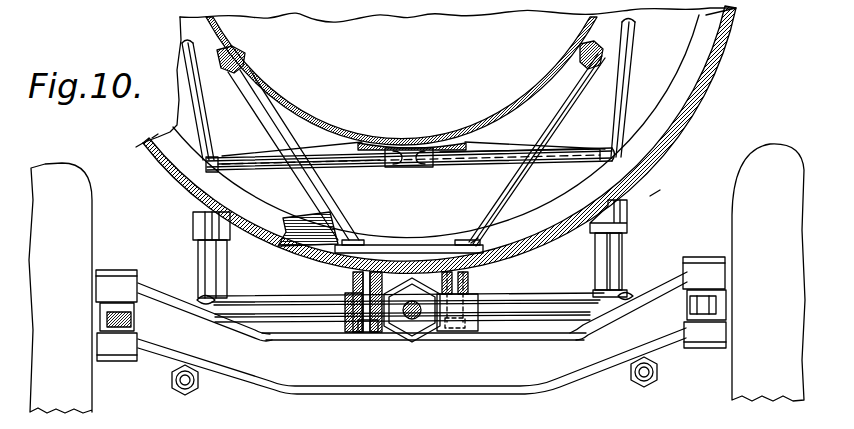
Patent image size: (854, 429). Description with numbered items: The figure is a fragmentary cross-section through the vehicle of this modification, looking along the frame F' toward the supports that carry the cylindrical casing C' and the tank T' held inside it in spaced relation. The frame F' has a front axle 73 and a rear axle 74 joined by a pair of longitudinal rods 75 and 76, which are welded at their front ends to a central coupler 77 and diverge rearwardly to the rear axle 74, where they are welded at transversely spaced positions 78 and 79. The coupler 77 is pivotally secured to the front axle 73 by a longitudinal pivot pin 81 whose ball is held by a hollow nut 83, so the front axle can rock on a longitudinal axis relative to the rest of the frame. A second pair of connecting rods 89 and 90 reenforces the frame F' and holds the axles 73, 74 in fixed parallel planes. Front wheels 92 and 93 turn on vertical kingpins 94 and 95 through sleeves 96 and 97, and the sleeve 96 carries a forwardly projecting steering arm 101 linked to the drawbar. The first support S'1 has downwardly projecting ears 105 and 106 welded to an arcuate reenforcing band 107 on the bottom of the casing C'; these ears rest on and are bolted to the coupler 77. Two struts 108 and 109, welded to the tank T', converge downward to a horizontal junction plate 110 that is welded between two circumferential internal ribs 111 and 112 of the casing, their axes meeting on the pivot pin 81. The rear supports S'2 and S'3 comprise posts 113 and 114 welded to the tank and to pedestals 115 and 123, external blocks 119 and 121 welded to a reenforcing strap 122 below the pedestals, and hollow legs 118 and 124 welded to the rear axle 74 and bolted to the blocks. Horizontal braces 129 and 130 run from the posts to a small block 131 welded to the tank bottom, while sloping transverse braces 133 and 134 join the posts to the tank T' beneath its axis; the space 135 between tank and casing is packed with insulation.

The tank T' is at (439, 75).
The cylindrical casing C' is at (459, 139).
The frame F' is at (330, 406).
The first support S'1 is at (279, 88).
The rear support S'2 is at (145, 128).
The rear support S'3 is at (649, 92).
The front axle 73 is at (505, 389).
The rear axle 74 is at (565, 306).
The longitudinal rod 75 is at (280, 312).
The longitudinal rod 76 is at (545, 306).
The coupler 77 is at (358, 332).
The welded position 78 is at (201, 300).
The welded position 79 is at (622, 296).
The pivot pin 81 is at (409, 320).
The hollow nut 83 is at (425, 323).
The connecting rod 89 is at (194, 386).
The connecting rod 90 is at (642, 384).
The front wheel 92 is at (72, 378).
The front wheel 93 is at (760, 372).
The kingpin 94 is at (108, 272).
The kingpin 95 is at (712, 262).
The sleeve 96 is at (105, 312).
The sleeve 97 is at (690, 313).
The steering arm 101 is at (123, 318).
The ear 105 is at (352, 280).
The ear 106 is at (469, 280).
The arcuate reenforcing band 107 is at (304, 268).
The strut 108 is at (313, 192).
The strut 109 is at (514, 183).
The junction plate 110 is at (392, 246).
The internal reenforcing rib 111 is at (184, 172).
The internal reenforcing rib 112 is at (503, 232).
The post 113 is at (632, 40).
The post 114 is at (205, 107).
The pedestal 115 is at (573, 166).
The hollow leg 118 is at (622, 249).
The external block 119 is at (628, 216).
The external block 121 is at (194, 228).
The reenforcing strap 122 is at (656, 196).
The pedestal 123 is at (222, 175).
The hollow leg 124 is at (200, 270).
The longitudinal brace 129 is at (482, 164).
The longitudinal brace 130 is at (362, 164).
The block 131 is at (412, 164).
The transverse brace 133 is at (480, 143).
The transverse brace 134 is at (336, 147).
The space 135 is at (648, 72).